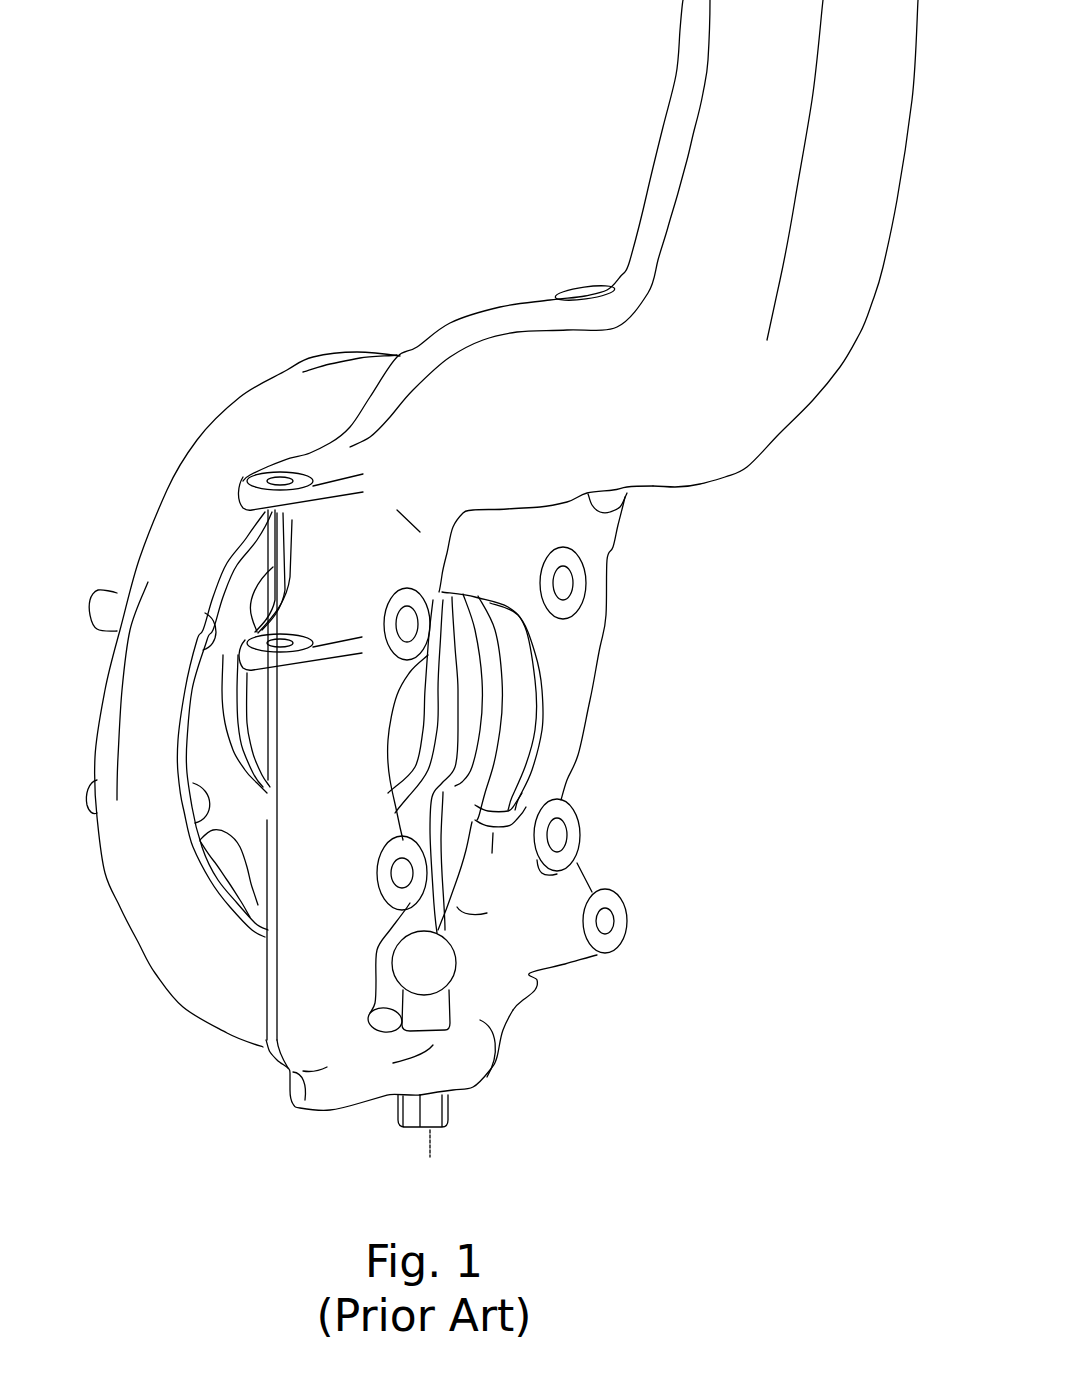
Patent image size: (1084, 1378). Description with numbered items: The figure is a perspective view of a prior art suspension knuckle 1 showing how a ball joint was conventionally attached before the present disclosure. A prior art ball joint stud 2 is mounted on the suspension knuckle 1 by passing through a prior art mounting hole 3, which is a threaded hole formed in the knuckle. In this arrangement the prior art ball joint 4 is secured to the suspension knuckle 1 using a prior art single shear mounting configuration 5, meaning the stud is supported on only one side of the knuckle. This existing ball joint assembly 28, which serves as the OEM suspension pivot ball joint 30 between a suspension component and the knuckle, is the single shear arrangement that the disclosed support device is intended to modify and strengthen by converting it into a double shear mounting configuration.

The suspension knuckle 1 is at (325, 320).
The ball joint stud 2 is at (433, 1018).
The mounting hole 3 is at (363, 1058).
The ball joint 4 is at (492, 1000).
The single shear mounting configuration 5 is at (490, 952).
The ball joint assembly 28 is at (366, 1124).
The OEM suspension pivot ball joint 30 is at (391, 1152).